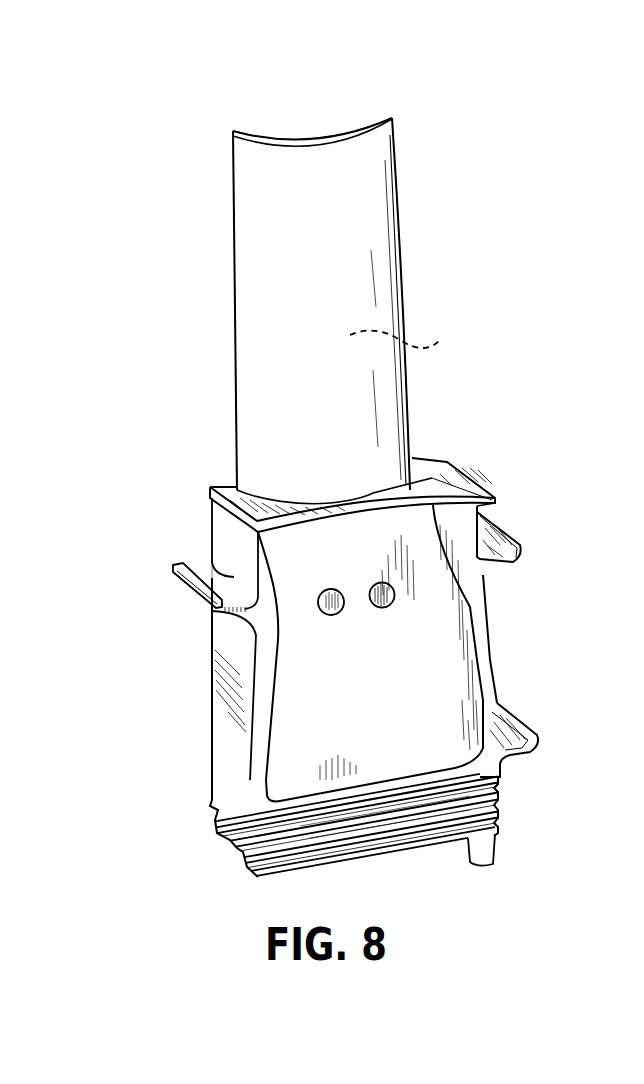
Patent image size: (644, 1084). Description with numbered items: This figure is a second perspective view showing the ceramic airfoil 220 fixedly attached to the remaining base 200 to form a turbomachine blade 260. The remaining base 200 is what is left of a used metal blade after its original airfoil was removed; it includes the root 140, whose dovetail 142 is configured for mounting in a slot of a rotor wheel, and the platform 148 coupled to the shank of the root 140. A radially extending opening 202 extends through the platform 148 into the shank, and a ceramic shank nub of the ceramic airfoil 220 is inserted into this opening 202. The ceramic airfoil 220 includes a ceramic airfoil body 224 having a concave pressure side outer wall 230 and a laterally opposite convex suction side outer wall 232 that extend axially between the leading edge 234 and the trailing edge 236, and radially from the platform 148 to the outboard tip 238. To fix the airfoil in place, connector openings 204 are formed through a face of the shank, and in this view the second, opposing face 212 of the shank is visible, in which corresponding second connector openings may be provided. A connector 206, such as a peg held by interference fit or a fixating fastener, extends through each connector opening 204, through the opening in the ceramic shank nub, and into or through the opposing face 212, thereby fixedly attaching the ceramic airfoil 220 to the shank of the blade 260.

The root 140 is at (562, 781).
The dovetail 142 is at (337, 840).
The platform 148 is at (228, 488).
The remaining base 200 is at (170, 751).
The radially extending opening 202 is at (372, 493).
The connector opening 204 is at (378, 586).
The connector 206 is at (327, 612).
The second opposing face 212 is at (423, 658).
The ceramic airfoil 220 is at (430, 275).
The ceramic airfoil body 224 is at (257, 327).
The pressure side outer wall 230 is at (416, 337).
The suction side outer wall 232 is at (357, 180).
The leading edge 234 is at (394, 132).
The trailing edge 236 is at (232, 266).
The outboard tip 238 is at (322, 138).
The turbomachine blade 260 is at (415, 94).